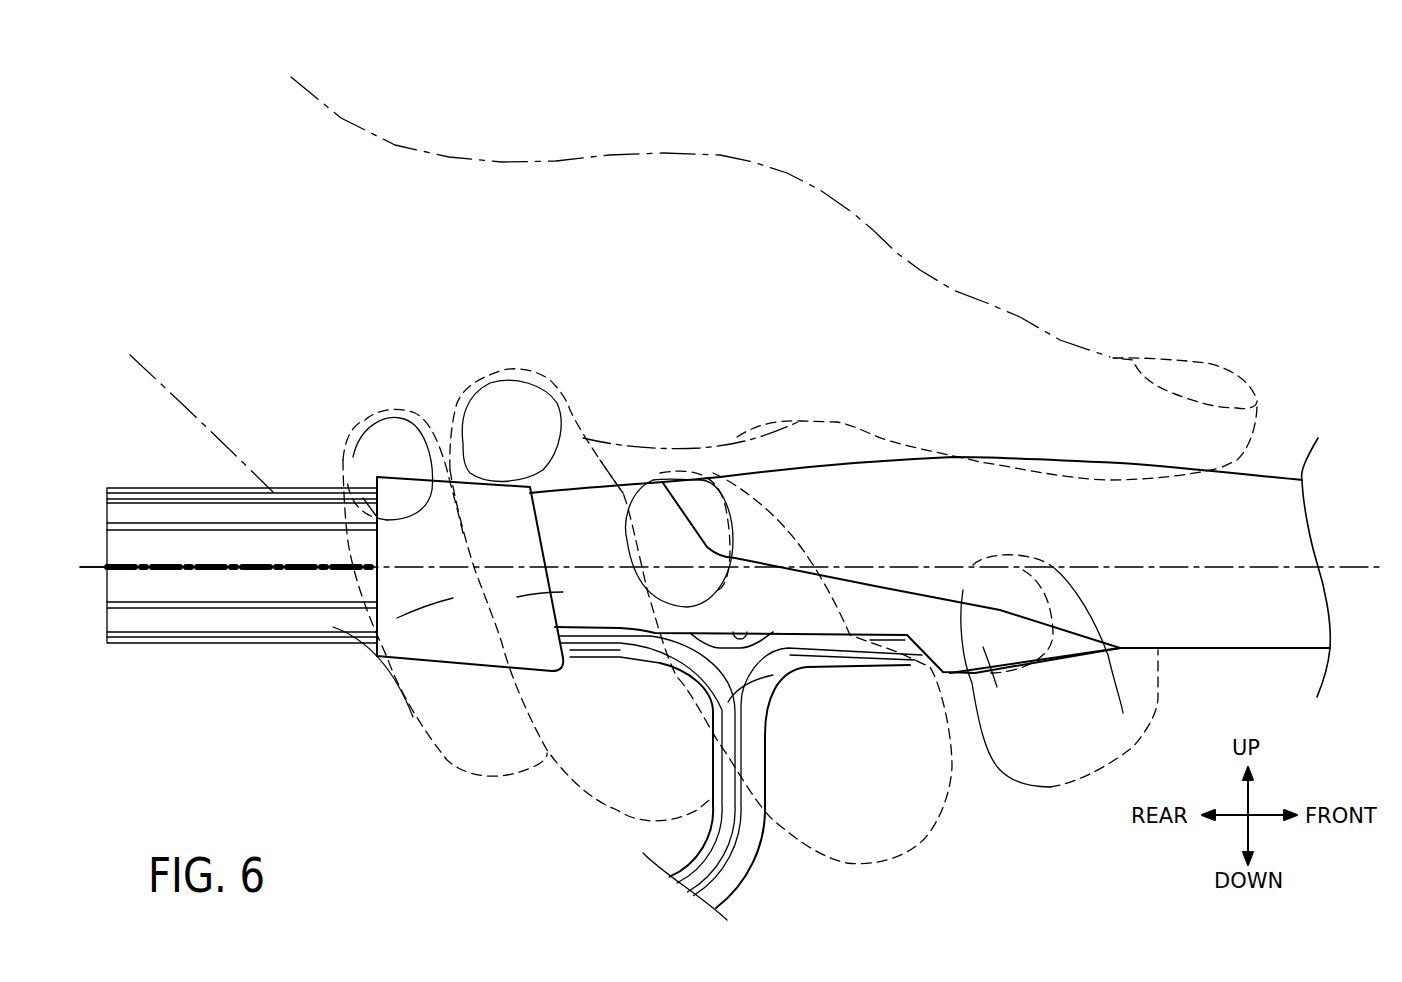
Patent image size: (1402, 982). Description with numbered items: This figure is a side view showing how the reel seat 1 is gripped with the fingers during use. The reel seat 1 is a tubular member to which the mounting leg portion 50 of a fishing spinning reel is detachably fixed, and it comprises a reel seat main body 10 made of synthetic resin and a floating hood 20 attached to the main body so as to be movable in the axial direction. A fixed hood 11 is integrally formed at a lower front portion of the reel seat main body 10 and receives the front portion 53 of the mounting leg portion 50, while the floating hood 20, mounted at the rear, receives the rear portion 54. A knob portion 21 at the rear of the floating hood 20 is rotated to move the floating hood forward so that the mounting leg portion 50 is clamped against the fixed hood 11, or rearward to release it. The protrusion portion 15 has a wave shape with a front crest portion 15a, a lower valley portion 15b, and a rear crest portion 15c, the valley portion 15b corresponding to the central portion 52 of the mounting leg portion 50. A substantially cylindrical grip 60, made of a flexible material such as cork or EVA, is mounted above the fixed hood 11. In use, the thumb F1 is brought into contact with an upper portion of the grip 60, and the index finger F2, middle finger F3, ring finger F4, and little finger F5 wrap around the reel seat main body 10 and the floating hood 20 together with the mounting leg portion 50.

The reel seat 1 is at (706, 400).
The reel seat main body 10 is at (880, 520).
The fixed hood 11 is at (987, 650).
The protrusion portion 15 is at (779, 644).
The front crest portion 15a is at (858, 668).
The valley portion 15b is at (748, 632).
The rear crest portion 15c is at (647, 665).
The floating hood 20 is at (446, 645).
The knob portion 21 is at (248, 621).
The mounting leg portion 50 is at (768, 852).
The central portion 52 is at (712, 692).
The front portion 53 is at (819, 658).
The rear portion 54 is at (659, 663).
The grip 60 is at (1260, 473).
The thumb F1 is at (1113, 357).
The index finger F2 is at (1083, 787).
The middle finger F3 is at (907, 853).
The ring finger F4 is at (613, 813).
The little finger F5 is at (477, 777).